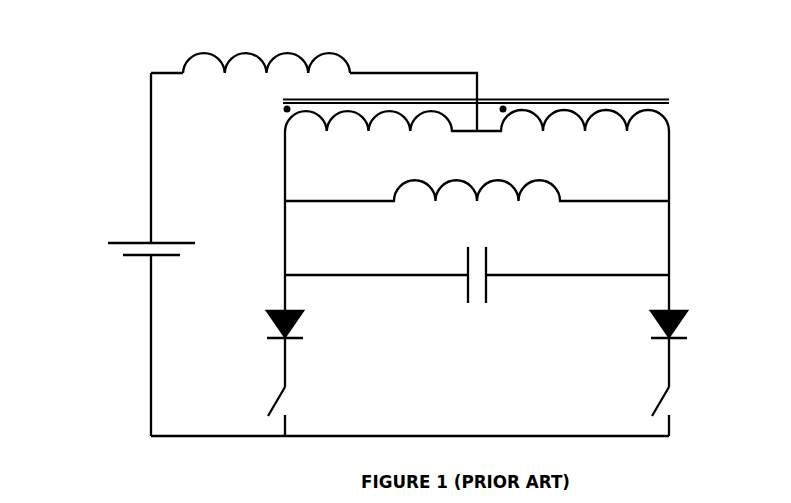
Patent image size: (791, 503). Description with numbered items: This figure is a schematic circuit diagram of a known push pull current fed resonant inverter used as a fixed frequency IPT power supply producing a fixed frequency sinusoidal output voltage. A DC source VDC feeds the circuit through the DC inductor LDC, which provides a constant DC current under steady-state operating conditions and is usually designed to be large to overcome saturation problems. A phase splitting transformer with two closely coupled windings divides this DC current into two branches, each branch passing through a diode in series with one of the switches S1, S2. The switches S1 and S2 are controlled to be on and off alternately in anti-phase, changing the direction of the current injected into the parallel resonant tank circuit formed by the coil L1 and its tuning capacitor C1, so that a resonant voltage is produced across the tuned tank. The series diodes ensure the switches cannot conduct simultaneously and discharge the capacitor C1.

The DC inductor LDC is at (266, 45).
The coil L1 is at (477, 172).
The tuning capacitor C1 is at (477, 256).
The DC voltage source VDC is at (118, 251).
The switch S1 is at (304, 411).
The switch S2 is at (689, 411).